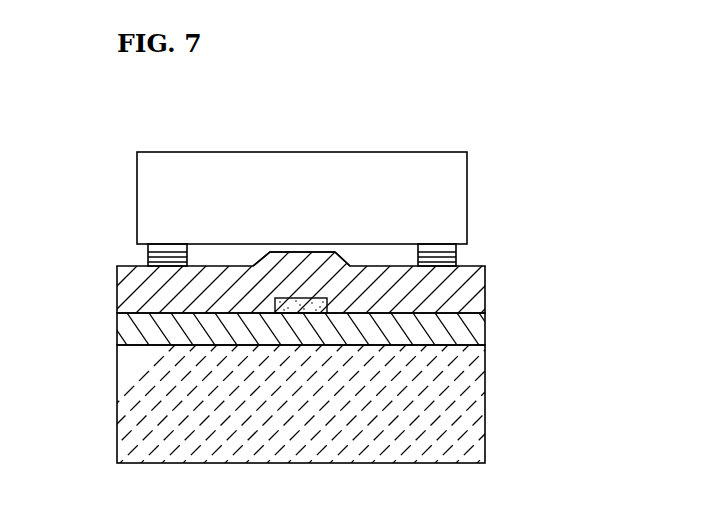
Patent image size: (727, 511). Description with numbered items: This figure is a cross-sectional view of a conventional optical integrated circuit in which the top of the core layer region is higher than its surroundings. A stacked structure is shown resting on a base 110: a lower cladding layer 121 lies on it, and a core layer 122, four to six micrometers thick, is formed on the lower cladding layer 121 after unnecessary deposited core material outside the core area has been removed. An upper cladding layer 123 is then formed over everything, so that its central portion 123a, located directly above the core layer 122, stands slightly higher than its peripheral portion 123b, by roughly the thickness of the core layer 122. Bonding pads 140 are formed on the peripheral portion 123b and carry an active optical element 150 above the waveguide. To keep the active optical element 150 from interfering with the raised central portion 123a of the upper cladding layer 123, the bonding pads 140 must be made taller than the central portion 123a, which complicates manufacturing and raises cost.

The substrate 110 is at (470, 417).
The lower cladding layer 121 is at (472, 331).
The core layer 122 is at (275, 304).
The upper cladding layer 123 is at (470, 290).
The central portion 123a is at (290, 252).
The peripheral portion 123b is at (373, 266).
The bonding pads 140 is at (136, 257).
The active optical element 150 is at (447, 195).